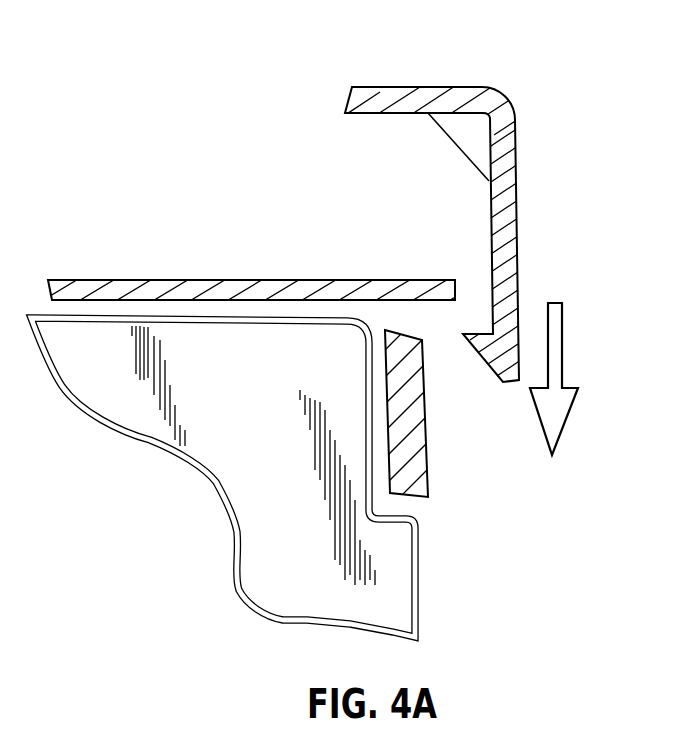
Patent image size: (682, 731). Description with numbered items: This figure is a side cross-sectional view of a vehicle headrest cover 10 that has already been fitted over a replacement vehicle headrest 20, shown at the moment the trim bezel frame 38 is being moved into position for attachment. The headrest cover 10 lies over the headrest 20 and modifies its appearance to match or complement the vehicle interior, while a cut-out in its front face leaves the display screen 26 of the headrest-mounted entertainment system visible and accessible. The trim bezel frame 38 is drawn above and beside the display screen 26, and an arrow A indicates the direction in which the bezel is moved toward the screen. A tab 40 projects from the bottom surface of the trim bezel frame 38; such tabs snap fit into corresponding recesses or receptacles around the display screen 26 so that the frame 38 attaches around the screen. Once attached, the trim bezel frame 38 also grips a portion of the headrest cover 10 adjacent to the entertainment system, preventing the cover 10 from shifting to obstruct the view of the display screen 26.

The vehicle headrest cover 10 is at (184, 280).
The vehicle headrest 20 is at (107, 317).
The display screen 26 is at (428, 497).
The trim bezel frame 38 is at (453, 86).
The tab 40 is at (487, 353).
The arrow A is at (562, 332).